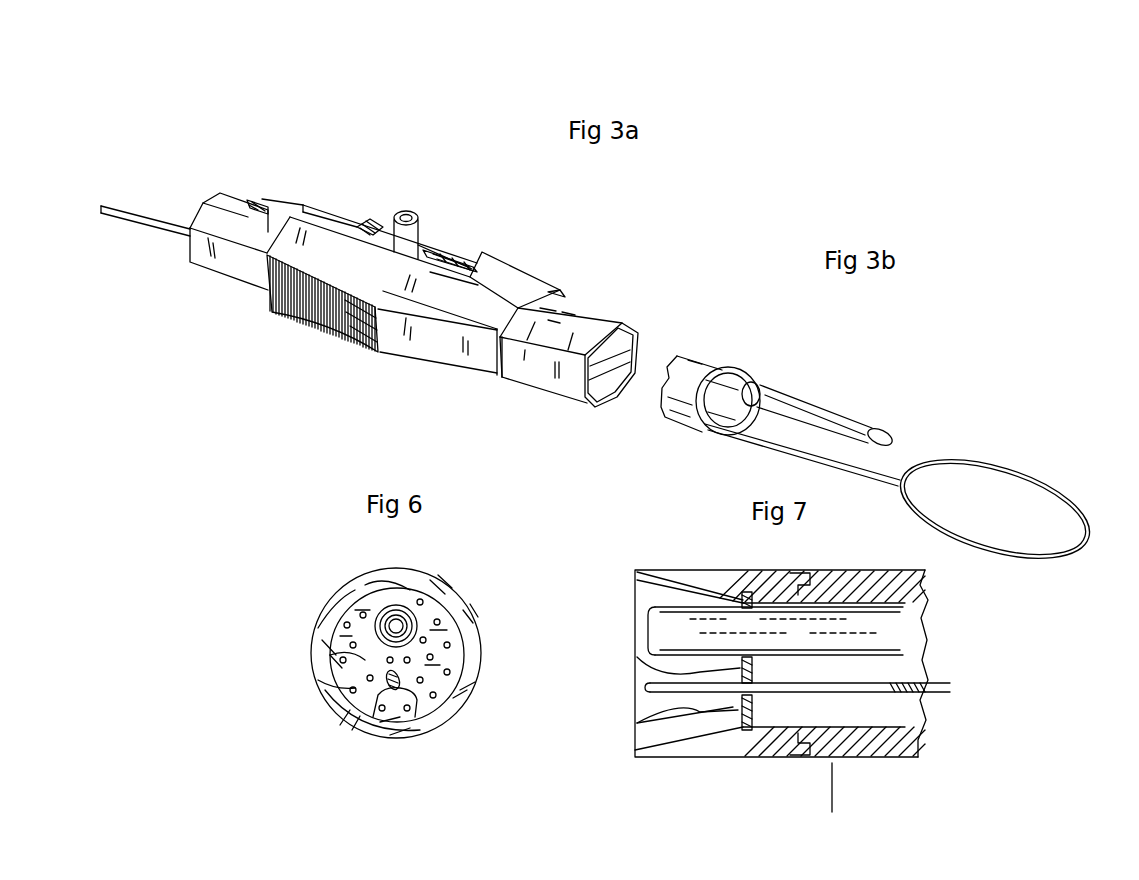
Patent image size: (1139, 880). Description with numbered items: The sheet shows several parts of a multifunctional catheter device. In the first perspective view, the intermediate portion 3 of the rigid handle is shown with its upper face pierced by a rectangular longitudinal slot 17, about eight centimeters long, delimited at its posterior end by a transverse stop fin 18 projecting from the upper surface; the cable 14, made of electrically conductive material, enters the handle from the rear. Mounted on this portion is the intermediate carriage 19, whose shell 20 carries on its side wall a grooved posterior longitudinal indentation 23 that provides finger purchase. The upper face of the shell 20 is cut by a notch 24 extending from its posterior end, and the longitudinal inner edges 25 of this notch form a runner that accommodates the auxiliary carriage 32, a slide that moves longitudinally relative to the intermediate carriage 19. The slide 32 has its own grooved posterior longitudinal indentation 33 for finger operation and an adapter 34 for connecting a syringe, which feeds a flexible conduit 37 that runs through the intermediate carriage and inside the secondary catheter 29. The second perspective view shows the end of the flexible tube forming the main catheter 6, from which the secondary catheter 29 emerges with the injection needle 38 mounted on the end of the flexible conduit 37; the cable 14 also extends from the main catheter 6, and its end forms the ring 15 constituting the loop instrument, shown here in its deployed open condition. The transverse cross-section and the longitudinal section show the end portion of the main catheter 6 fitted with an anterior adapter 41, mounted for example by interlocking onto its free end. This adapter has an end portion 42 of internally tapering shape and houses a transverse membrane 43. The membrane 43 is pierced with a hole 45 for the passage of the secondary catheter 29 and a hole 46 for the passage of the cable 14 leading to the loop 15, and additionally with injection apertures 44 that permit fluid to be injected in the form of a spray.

In FIG. 3A, the intermediate portion 3 is at (218, 227).
In FIG. 3B, the flexible tube / main catheter 6 is at (700, 368).
In FIG. 6, the flexible tube / main catheter 6 is at (463, 625).
In FIG. 7, the flexible tube / main catheter 6 is at (882, 747).
In FIG. 3A, the cable 14 is at (137, 223).
In FIG. 6, the cable 14 is at (402, 702).
In FIG. 7, the cable 14 is at (893, 695).
In FIG. 3B, the ring (loop) 15 is at (1003, 472).
In FIG. 3A, the longitudinal slot 17 is at (276, 203).
In FIG. 3A, the transverse stop fin 18 is at (240, 202).
In FIG. 3A, the intermediate carriage 19 is at (417, 360).
In FIG. 3A, the shell 20 is at (500, 277).
In FIG. 3A, the posterior longitudinal indentation 23 is at (310, 313).
In FIG. 3A, the notch 24 is at (450, 262).
In FIG. 3A, the longitudinal inner edges 25 is at (313, 208).
In FIG. 3B, the secondary catheter 29 is at (842, 375).
In FIG. 6, the secondary catheter 29 is at (412, 615).
In FIG. 7, the secondary catheter 29 is at (900, 633).
In FIG. 3A, the auxiliary carriage (slide) 32 is at (389, 215).
In FIG. 3A, the posterior longitudinal indentation 33 is at (367, 217).
In FIG. 3A, the adapter 34 is at (432, 250).
In FIG. 6, the flexible conduit 37 is at (383, 605).
In FIG. 3B, the injection needle 38 is at (870, 430).
In FIG. 7, the anterior adapter 41 is at (730, 743).
In FIG. 7, the end portion 42 is at (667, 730).
In FIG. 6, the transverse membrane 43 is at (332, 690).
In FIG. 7, the transverse membrane 43 is at (633, 722).
In FIG. 6, the injection apertures 44 is at (340, 640).
In FIG. 7, the injection apertures 44 is at (637, 657).
In FIG. 6, the hole 45 is at (357, 663).
In FIG. 6, the hole 46 is at (363, 722).